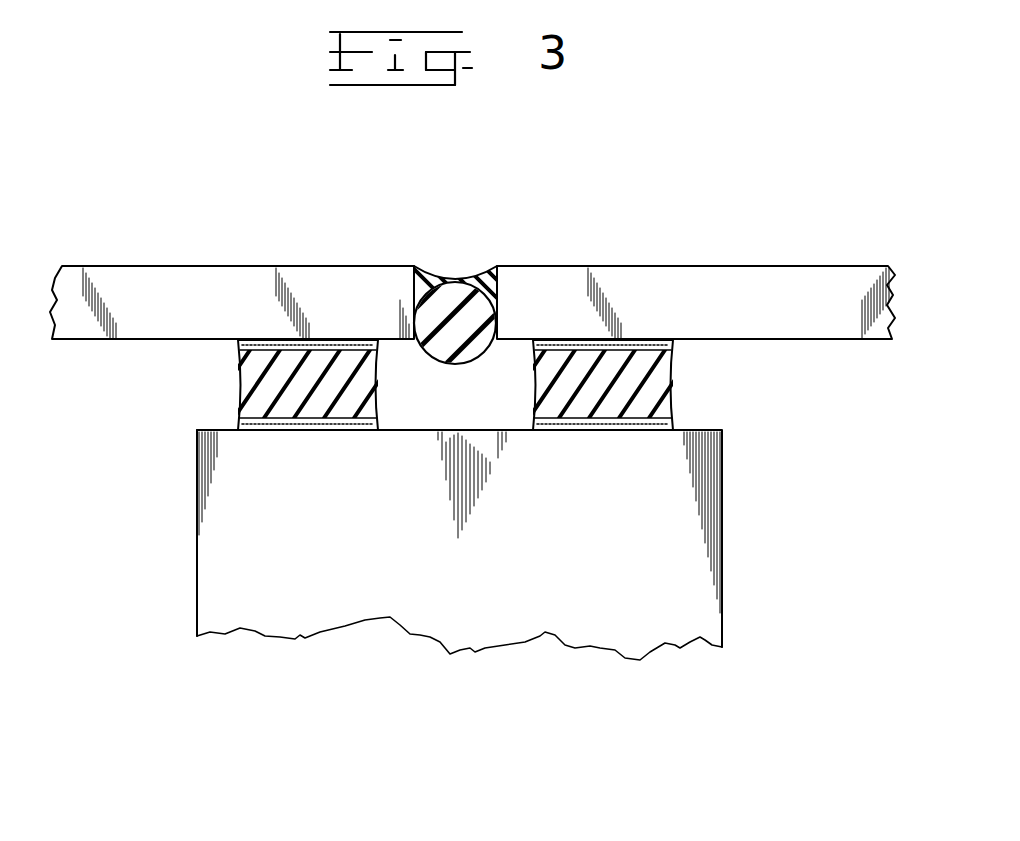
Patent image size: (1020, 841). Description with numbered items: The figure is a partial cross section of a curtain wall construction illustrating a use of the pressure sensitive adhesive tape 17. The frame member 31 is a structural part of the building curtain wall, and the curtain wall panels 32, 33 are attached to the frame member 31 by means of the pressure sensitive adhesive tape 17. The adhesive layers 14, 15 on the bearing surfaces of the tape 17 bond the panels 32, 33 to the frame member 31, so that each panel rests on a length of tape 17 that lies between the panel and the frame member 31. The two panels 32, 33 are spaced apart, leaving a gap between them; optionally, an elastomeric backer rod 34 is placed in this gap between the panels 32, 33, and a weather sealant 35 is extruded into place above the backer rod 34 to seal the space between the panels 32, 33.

The frame member 31 is at (568, 600).
The curtain wall panel 32 is at (157, 280).
The curtain wall panel 33 is at (685, 283).
The elastomeric backer rod 34 is at (462, 303).
The weather sealant 35 is at (438, 277).
The adhesive layer 15 is at (240, 424).
The adhesive layer 14 is at (240, 343).
The pressure sensitive adhesive tape 17 is at (192, 390).